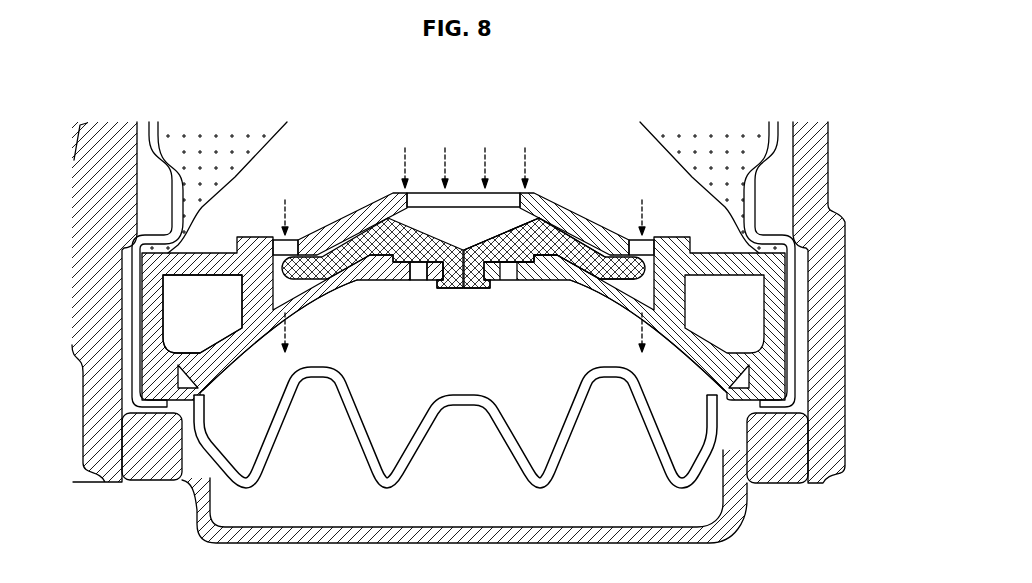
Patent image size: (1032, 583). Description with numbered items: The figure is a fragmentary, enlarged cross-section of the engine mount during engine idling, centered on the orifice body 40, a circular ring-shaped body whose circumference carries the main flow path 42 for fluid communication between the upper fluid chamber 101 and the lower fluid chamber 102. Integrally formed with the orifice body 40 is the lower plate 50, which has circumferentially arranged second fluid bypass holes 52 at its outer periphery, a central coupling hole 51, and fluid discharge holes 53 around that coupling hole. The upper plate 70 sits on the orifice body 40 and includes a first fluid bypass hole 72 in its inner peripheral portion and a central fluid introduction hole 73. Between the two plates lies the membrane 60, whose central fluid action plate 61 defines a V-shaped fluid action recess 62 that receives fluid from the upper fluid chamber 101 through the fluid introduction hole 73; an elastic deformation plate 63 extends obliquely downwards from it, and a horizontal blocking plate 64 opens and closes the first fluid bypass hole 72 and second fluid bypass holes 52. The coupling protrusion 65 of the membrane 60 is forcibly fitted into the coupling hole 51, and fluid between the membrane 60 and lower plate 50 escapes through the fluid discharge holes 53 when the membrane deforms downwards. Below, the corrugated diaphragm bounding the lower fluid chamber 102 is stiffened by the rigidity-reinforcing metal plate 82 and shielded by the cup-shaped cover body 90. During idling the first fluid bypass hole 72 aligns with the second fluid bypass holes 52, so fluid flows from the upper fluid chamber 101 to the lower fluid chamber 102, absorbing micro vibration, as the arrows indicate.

The orifice body 40 is at (245, 364).
The main flow path 42 is at (192, 312).
The lower plate 50 is at (368, 281).
The coupling hole 51 is at (452, 276).
The second fluid bypass holes 52 is at (294, 306).
The fluid discharge holes 53 is at (447, 258).
The membrane 60 is at (573, 222).
The fluid action plate 61 is at (500, 262).
The fluid action recess 62 is at (500, 250).
The elastic deformation plate 63 is at (520, 258).
The blocking plate 64 is at (553, 255).
The coupling protrusion 65 is at (458, 290).
The upper plate 70 is at (352, 213).
The first fluid bypass hole 72 is at (280, 243).
The fluid introduction hole 73 is at (426, 193).
The rigidity-reinforcing metal plate 82 is at (733, 432).
The cup-shaped cover body 90 is at (745, 514).
The upper fluid chamber 101 is at (678, 194).
The lower fluid chamber 102 is at (672, 366).